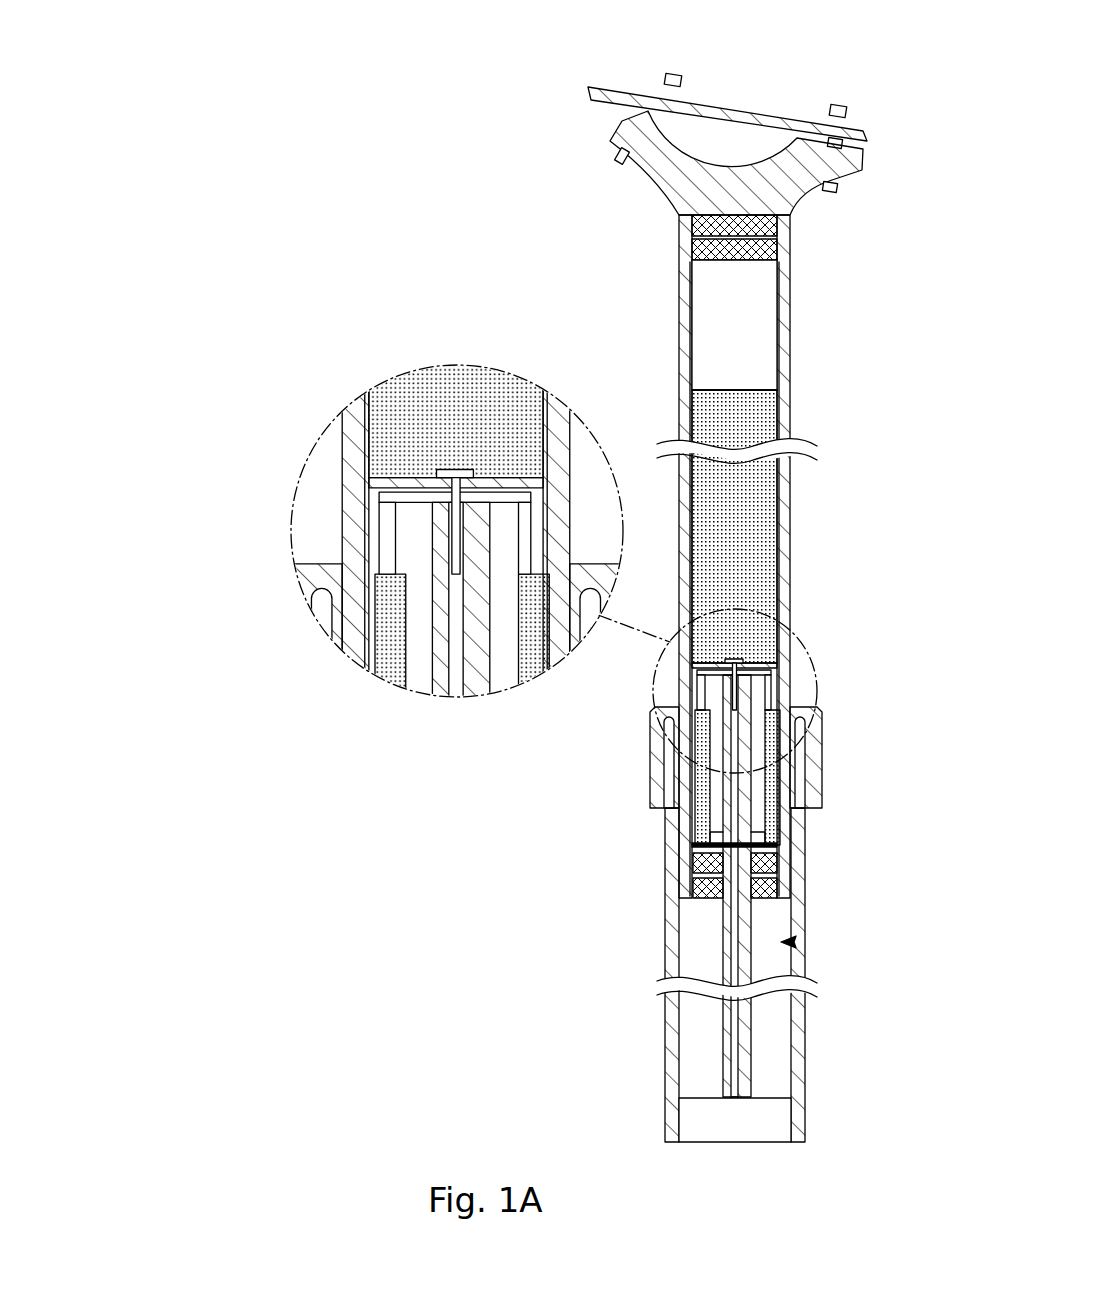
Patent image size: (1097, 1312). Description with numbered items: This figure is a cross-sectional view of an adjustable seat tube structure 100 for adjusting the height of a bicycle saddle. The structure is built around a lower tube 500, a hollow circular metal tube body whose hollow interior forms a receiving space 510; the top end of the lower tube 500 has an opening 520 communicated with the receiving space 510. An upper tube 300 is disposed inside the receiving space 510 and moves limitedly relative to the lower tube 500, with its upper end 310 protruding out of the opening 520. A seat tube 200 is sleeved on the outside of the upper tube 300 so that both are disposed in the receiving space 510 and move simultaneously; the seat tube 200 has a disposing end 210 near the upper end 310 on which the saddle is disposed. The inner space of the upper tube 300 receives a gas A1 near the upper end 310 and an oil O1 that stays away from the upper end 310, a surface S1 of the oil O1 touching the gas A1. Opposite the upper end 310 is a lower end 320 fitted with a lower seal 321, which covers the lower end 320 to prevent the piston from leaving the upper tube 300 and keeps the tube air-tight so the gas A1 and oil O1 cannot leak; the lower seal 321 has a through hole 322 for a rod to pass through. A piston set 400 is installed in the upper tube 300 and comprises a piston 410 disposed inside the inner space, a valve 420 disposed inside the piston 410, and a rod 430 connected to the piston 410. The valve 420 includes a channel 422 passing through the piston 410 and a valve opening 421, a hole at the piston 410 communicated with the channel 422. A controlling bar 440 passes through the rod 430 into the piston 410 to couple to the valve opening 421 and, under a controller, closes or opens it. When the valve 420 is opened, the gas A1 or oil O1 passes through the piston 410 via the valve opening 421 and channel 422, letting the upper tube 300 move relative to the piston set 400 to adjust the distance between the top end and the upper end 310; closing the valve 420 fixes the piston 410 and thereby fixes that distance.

The adjustable seat tube structure 100 is at (554, 58).
The seat tube 200 is at (739, 556).
The disposing end 210 is at (858, 128).
The upper tube 300 is at (683, 277).
The upper end 310 is at (710, 187).
The lower end 320 is at (676, 883).
The lower seal 321 is at (694, 868).
The through hole 322 is at (720, 870).
The piston set 400 is at (354, 733).
The piston 410 is at (420, 480).
The valve 420 is at (339, 533).
The valve opening 421 is at (425, 498).
The channel 422 is at (392, 536).
The rod 430 is at (440, 648).
The controlling bar 440 is at (455, 594).
The lower tube 500 is at (806, 853).
The receiving space 510 is at (796, 942).
The opening 520 is at (778, 712).
The gas A1 is at (766, 330).
The surface of the oil S1 is at (735, 390).
The oil O1 is at (757, 488).